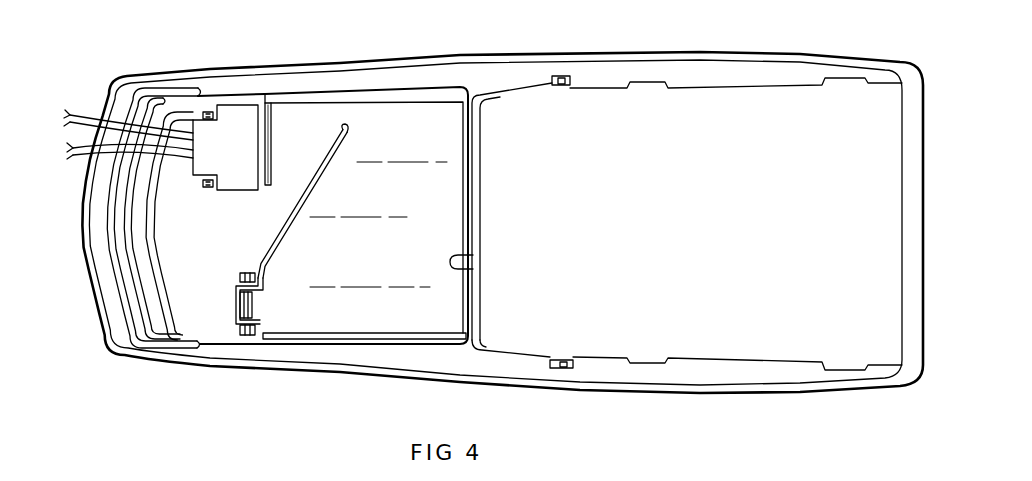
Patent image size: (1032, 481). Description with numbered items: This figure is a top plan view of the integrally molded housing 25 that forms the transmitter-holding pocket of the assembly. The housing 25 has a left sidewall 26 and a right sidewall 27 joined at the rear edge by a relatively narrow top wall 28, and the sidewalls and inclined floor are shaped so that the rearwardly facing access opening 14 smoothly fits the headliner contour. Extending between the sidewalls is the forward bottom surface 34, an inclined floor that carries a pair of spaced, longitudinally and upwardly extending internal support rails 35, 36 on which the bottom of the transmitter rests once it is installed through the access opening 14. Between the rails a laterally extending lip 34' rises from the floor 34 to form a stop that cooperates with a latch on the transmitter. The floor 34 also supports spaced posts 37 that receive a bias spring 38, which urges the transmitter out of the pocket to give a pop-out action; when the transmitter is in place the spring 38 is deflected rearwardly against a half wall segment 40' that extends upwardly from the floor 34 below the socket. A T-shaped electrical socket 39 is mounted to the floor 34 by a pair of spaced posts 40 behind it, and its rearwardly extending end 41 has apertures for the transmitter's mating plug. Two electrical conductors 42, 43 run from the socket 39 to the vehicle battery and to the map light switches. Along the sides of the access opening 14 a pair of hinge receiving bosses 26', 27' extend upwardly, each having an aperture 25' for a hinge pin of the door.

The access opening 14 is at (490, 160).
The housing 25 is at (502, 199).
The aperture 25' is at (570, 222).
The left sidewall 26 is at (494, 43).
The hinge receiving boss 26' is at (586, 48).
The right sidewall 27 is at (527, 395).
The hinge receiving boss 27' is at (583, 391).
The top wall 28 is at (915, 188).
The forward bottom surface 34 is at (333, 215).
The lip 34' is at (493, 259).
The internal support rail 35 is at (360, 333).
The internal support rail 36 is at (388, 102).
The posts 37 is at (240, 328).
The bias spring 38 is at (317, 202).
The socket 39 is at (230, 108).
The posts 40 is at (188, 126).
The half wall segment 40' is at (294, 144).
The rearwardly extending end 41 is at (267, 100).
The electrical conductor 42 is at (86, 119).
The electrical conductor 43 is at (85, 157).